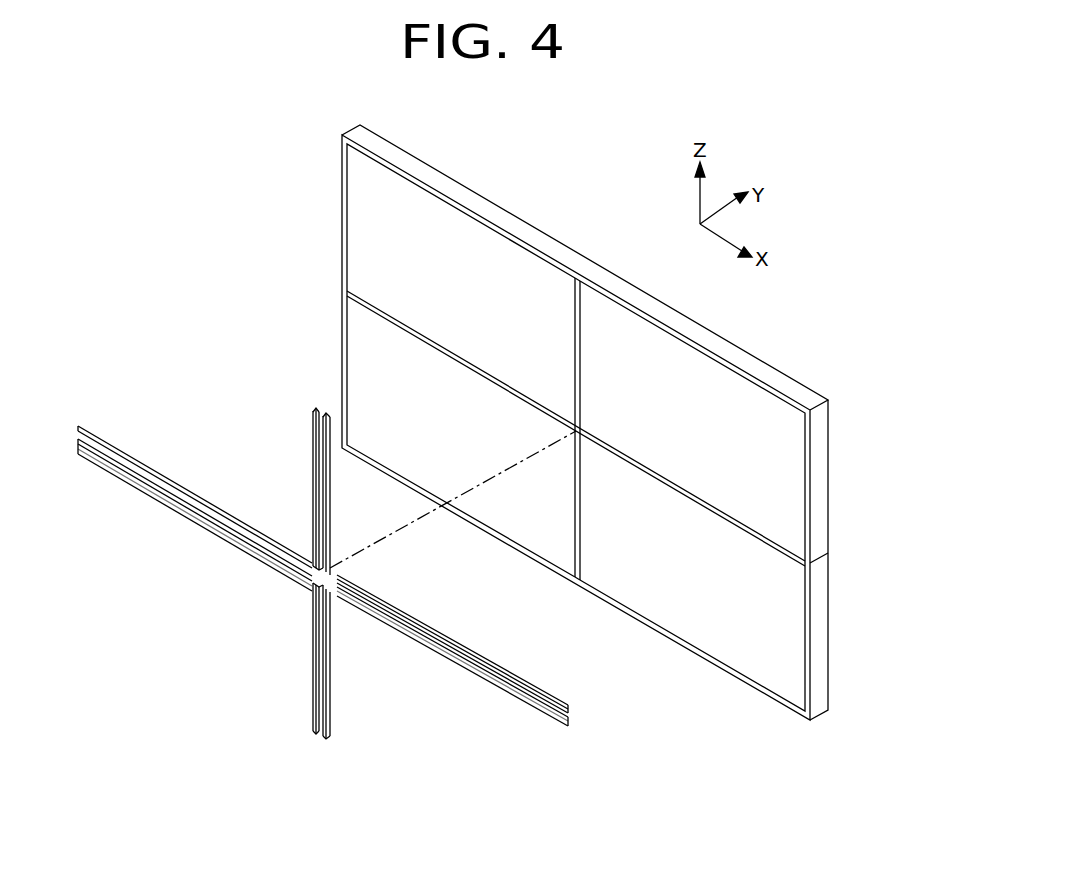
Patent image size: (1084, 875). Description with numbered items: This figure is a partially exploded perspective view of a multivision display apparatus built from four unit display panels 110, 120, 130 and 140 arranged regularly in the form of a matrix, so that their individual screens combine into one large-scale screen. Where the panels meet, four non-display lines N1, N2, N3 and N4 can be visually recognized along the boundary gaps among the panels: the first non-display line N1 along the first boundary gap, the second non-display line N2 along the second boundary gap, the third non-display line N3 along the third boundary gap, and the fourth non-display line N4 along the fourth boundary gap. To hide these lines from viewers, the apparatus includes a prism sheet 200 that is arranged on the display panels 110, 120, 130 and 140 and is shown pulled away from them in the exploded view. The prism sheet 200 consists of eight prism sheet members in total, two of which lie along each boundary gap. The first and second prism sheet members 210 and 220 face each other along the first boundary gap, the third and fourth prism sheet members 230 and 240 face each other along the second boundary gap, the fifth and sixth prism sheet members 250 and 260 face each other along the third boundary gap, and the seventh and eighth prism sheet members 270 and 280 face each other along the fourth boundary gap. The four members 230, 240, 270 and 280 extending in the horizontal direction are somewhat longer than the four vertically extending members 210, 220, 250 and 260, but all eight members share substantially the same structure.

The display panel 110 is at (516, 92).
The display panel 120 is at (797, 455).
The display panel 130 is at (795, 652).
The display panel 140 is at (368, 383).
The first non-display line N1 is at (582, 327).
The second non-display line N2 is at (783, 553).
The third non-display line N3 is at (580, 578).
The fourth non-display line N4 is at (365, 318).
The prism sheet 200 is at (280, 598).
The first prism sheet member 210 is at (313, 498).
The second prism sheet member 220 is at (330, 508).
The third prism sheet member 230 is at (507, 668).
The fourth prism sheet member 240 is at (502, 694).
The fifth prism sheet member 250 is at (314, 682).
The sixth prism sheet member 260 is at (334, 690).
The seventh prism sheet member 270 is at (181, 484).
The eighth prism sheet member 280 is at (175, 507).